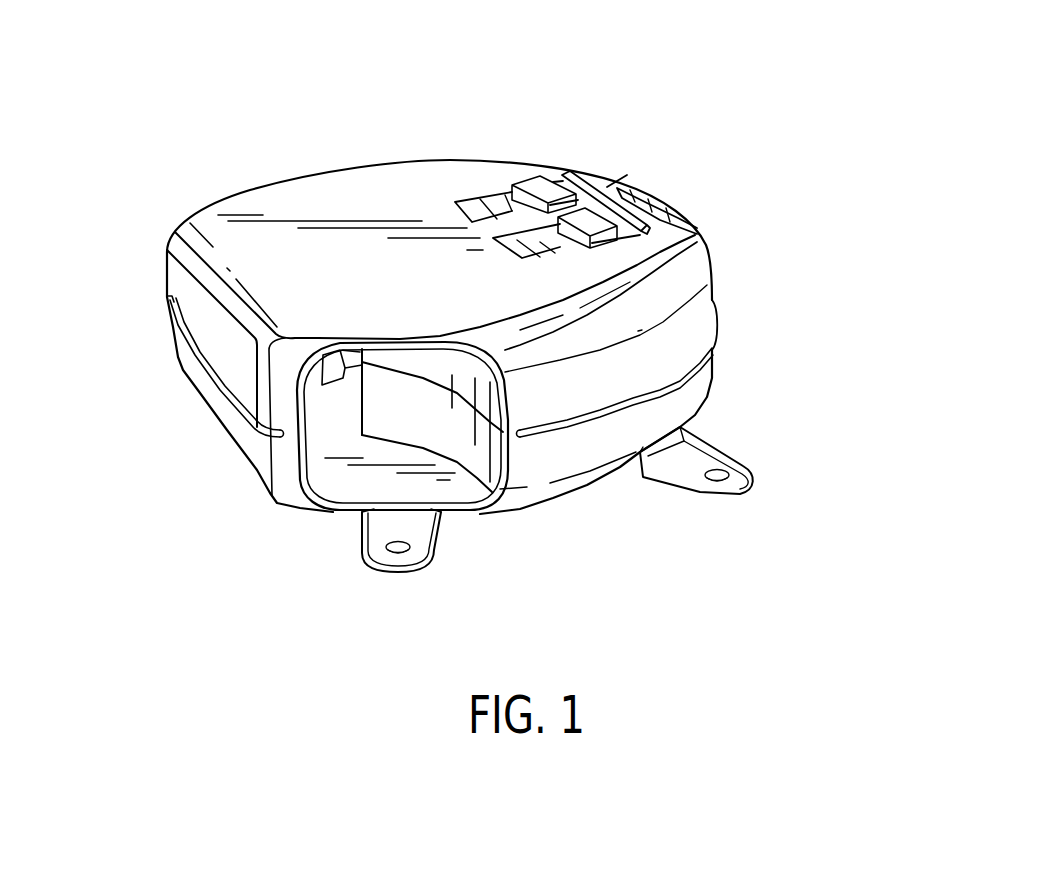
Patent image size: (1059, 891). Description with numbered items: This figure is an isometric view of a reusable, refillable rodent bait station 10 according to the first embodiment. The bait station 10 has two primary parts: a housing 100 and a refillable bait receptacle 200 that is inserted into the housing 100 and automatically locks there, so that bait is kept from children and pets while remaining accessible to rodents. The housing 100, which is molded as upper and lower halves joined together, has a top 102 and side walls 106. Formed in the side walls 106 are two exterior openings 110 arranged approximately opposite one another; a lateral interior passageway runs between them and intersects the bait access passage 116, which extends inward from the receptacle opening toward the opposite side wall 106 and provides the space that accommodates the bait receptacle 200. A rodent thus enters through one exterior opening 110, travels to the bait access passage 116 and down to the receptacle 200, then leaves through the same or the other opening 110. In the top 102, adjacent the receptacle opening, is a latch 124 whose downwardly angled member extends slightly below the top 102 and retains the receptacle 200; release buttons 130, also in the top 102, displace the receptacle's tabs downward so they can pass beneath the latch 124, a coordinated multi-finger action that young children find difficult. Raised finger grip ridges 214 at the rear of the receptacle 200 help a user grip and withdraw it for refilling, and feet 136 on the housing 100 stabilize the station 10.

The bait station 10 is at (712, 73).
The housing 100 is at (585, 490).
The top 102 is at (335, 210).
The side walls 106 is at (193, 310).
The exterior openings 110 is at (341, 478).
The bait access passage 116 is at (350, 393).
The latch 124 is at (565, 176).
The release buttons 130 is at (530, 182).
The feet 136 is at (420, 533).
The refillable bait receptacle 200 is at (705, 219).
The finger grip ridges 214 is at (650, 200).